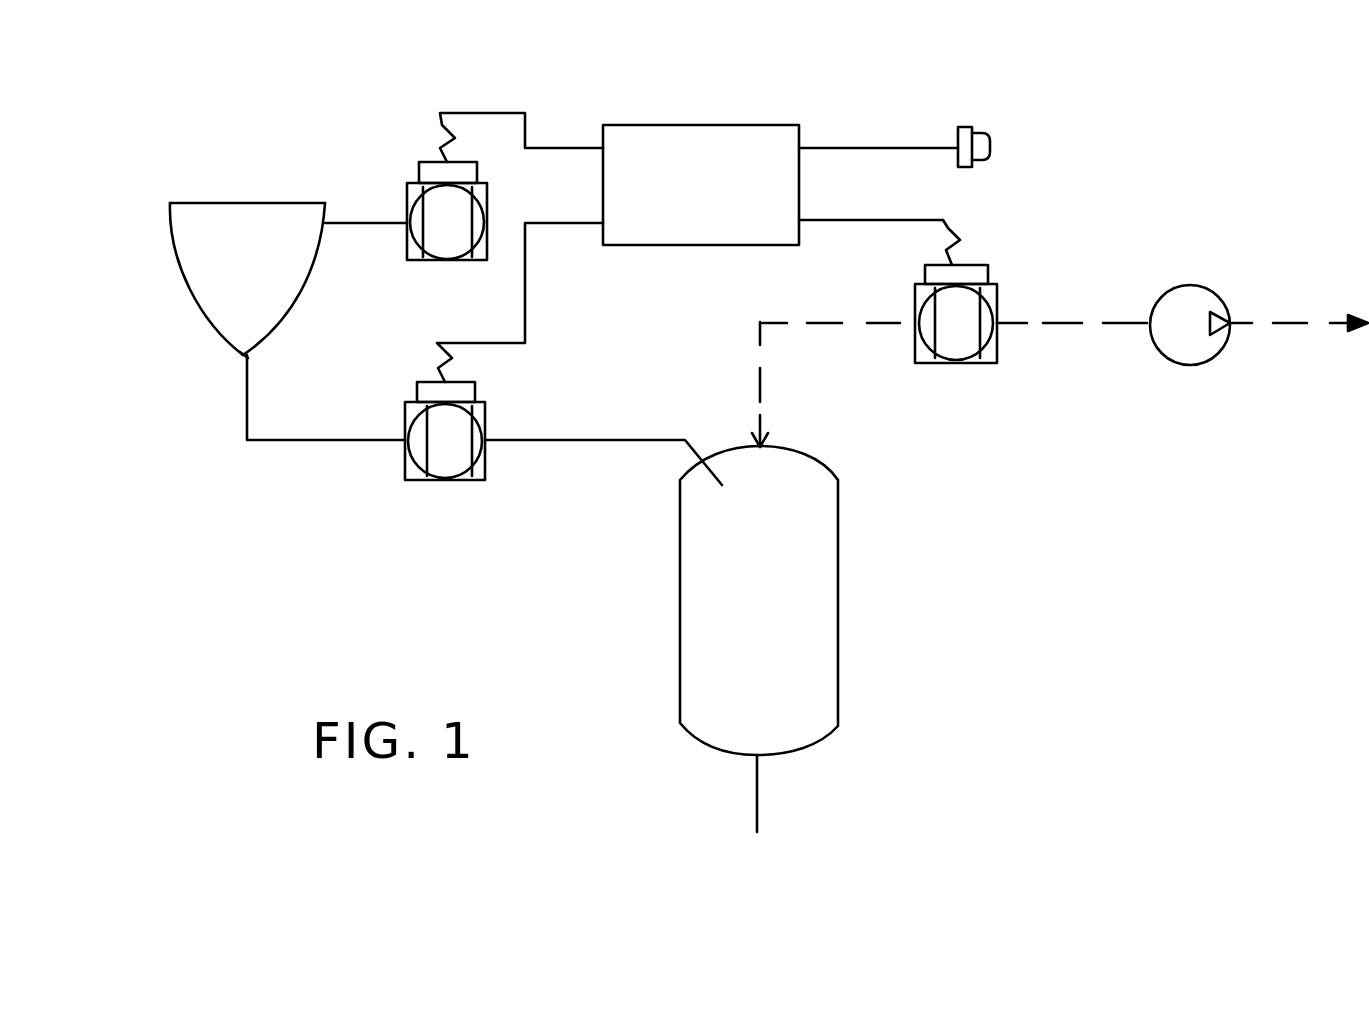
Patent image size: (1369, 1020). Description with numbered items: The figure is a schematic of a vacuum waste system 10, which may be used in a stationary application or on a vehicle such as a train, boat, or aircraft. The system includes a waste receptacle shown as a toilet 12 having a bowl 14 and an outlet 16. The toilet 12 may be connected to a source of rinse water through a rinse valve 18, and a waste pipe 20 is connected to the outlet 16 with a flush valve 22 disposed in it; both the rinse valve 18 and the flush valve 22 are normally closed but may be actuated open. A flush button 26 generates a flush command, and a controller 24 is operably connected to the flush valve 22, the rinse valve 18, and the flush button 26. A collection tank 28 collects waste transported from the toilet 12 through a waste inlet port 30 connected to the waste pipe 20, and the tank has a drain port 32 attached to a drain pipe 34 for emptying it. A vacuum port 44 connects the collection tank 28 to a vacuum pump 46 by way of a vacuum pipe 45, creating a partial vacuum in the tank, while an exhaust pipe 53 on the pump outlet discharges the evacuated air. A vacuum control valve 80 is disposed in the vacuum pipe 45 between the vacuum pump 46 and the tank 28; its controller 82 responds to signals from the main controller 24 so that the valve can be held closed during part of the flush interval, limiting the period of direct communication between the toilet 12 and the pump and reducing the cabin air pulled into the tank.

The vacuum waste system 10 is at (212, 570).
The toilet 12 is at (194, 196).
The bowl 14 is at (196, 280).
The outlet 16 is at (243, 355).
The rinse valve 18 is at (415, 190).
The waste pipe 20 is at (291, 441).
The flush valve 22 is at (440, 462).
The controller 24 is at (703, 145).
The flush button 26 is at (968, 133).
The collection tank 28 is at (822, 660).
The waste inlet port 30 is at (700, 460).
The drain port 32 is at (760, 758).
The drain pipe 34 is at (753, 817).
The vacuum port 44 is at (765, 443).
The vacuum pipe 45 is at (760, 323).
The vacuum pump 46 is at (1192, 357).
The exhaust pipe 53 is at (1297, 323).
The vacuum control valve 80 is at (955, 362).
The controller 82 is at (968, 272).